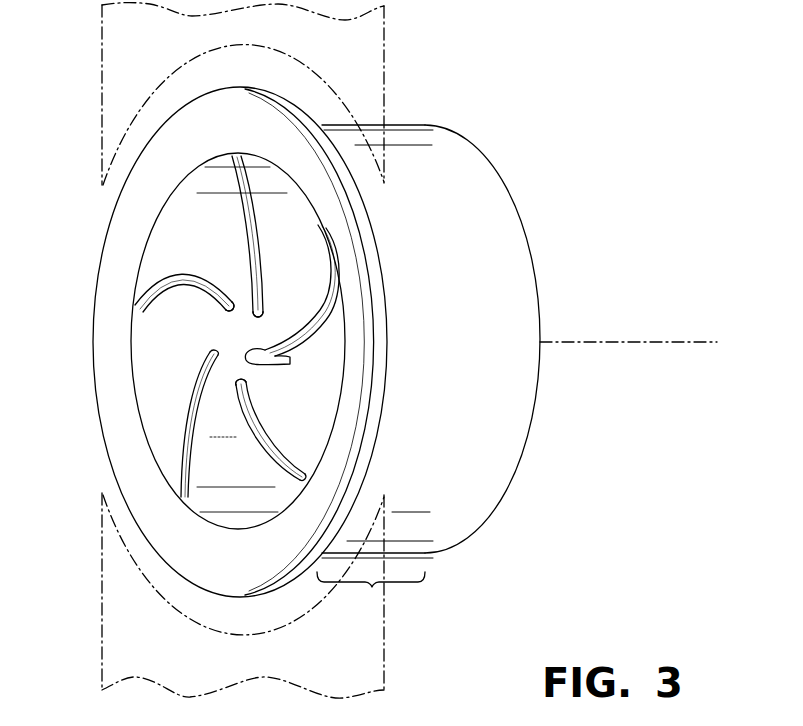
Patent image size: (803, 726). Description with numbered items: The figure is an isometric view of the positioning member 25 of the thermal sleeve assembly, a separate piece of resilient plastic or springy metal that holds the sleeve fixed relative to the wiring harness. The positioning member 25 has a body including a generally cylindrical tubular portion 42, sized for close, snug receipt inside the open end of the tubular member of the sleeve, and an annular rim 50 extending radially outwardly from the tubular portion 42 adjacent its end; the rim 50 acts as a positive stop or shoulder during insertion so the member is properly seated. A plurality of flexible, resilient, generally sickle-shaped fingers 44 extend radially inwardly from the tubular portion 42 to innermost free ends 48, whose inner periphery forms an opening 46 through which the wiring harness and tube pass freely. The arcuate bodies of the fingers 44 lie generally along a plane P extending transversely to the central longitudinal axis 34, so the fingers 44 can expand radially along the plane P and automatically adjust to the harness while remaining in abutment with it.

The plane P is at (388, 60).
The positioning member 25 is at (550, 141).
The central longitudinal axis 34 is at (627, 342).
The tubular portion 42 is at (372, 587).
The fingers 44 is at (253, 233).
The opening 46 is at (237, 323).
The free ends 48 is at (225, 305).
The annular rim 50 is at (183, 107).